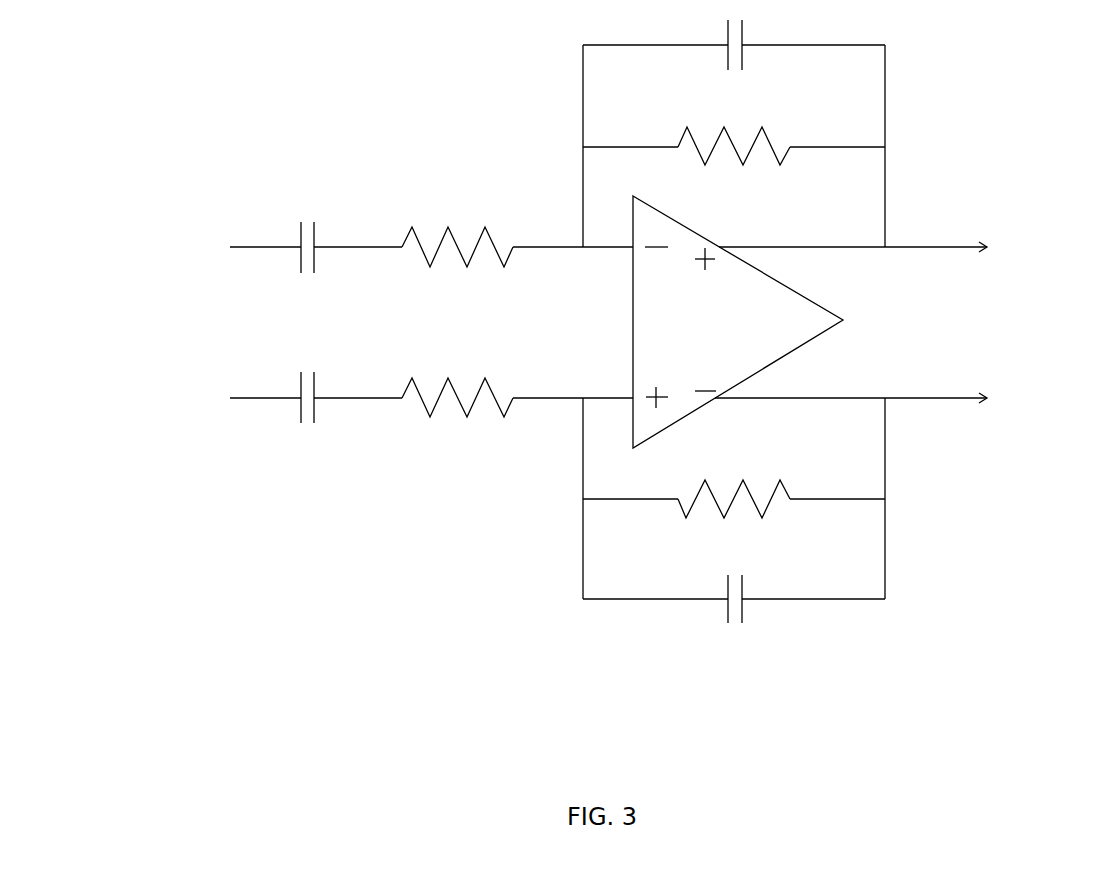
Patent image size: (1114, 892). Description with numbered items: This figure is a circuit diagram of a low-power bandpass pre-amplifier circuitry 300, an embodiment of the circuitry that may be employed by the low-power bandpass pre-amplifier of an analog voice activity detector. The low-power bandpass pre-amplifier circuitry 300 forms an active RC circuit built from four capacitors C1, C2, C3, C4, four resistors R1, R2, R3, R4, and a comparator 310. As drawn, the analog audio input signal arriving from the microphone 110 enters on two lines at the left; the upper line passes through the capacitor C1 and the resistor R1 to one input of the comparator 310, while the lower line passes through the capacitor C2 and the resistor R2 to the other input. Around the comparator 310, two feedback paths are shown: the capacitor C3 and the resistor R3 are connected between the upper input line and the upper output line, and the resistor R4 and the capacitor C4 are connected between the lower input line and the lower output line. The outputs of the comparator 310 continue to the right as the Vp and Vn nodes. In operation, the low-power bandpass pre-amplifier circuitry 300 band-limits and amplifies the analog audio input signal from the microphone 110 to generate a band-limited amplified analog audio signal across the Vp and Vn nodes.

The low-power bandpass pre-amplifier circuitry 300 is at (415, 752).
The comparator 310 is at (738, 322).
The microphone 110 is at (123, 328).
The capacitor C1 is at (301, 226).
The capacitor C2 is at (304, 419).
The capacitor C3 is at (737, 61).
The capacitor C4 is at (728, 617).
The resistor R1 is at (457, 223).
The resistor R2 is at (457, 422).
The resistor R3 is at (734, 166).
The resistor R4 is at (734, 514).
The Vp node Vp is at (899, 247).
The Vn node Vn is at (897, 397).